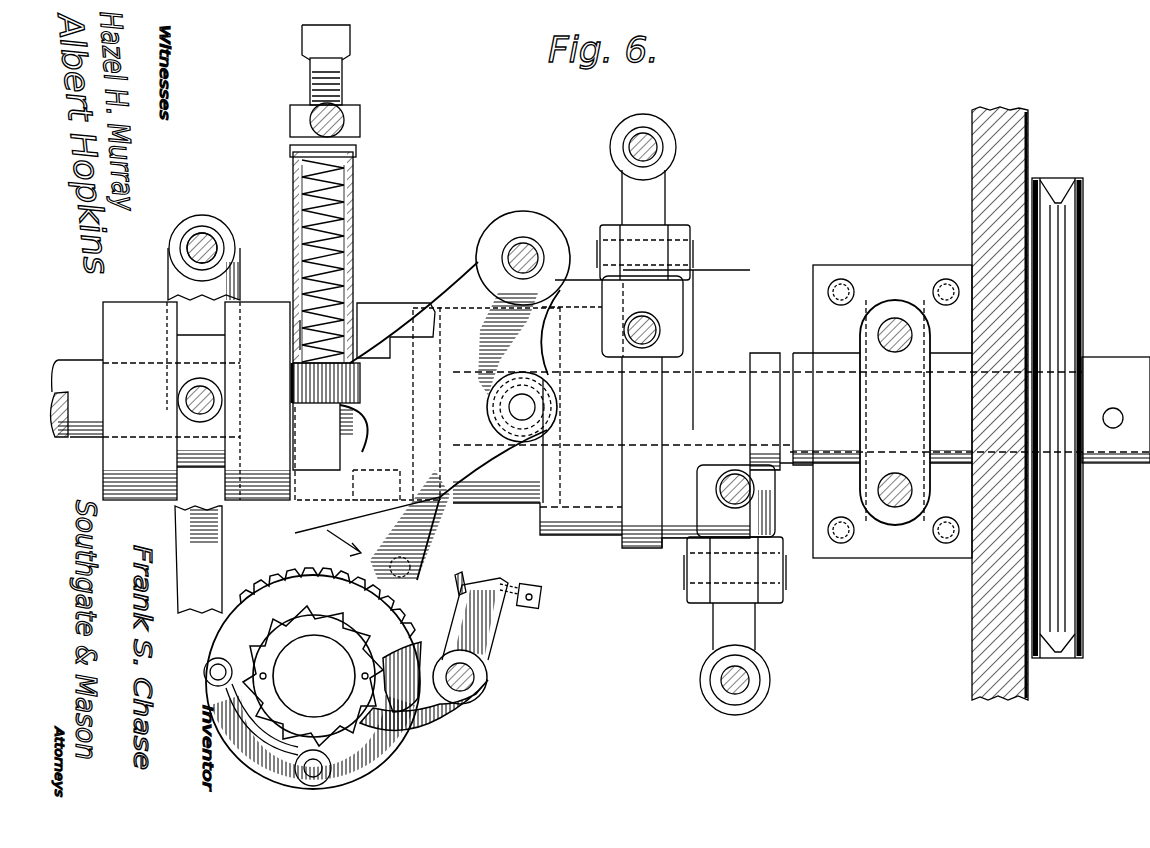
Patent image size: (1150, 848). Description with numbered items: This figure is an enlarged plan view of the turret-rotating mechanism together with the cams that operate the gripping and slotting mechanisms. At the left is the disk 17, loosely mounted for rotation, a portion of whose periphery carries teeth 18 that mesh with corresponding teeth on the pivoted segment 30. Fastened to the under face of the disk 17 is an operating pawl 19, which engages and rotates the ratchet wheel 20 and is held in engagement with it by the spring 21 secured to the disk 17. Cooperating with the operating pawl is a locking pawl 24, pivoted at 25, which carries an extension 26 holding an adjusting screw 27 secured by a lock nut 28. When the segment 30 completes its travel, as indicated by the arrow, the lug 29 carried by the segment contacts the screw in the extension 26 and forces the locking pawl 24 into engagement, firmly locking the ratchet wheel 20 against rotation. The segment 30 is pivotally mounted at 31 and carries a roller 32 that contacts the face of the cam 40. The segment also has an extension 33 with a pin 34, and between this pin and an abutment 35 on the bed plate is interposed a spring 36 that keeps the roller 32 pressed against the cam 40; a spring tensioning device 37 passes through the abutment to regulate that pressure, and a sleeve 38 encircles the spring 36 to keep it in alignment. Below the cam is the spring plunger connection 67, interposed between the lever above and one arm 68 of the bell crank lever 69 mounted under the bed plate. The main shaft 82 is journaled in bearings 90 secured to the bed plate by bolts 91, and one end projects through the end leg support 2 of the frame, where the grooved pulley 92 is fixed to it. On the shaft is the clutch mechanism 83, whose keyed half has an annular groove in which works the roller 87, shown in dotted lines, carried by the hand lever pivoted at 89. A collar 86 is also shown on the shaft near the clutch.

The end leg support 2 is at (1015, 132).
The disk 17 is at (225, 628).
The teeth 18 is at (403, 622).
The operating pawl 19 is at (298, 780).
The ratchet wheel 20 is at (395, 653).
The spring 21 is at (242, 735).
The locking pawl 24 is at (425, 735).
The pivot 25 is at (474, 680).
The extension 26 is at (485, 642).
The adjusting screw 27 is at (540, 596).
The lock nut 28 is at (508, 587).
The lug 29 is at (410, 563).
The pivoted segment 30 is at (427, 421).
The pivot 31 is at (524, 250).
The roller 32 is at (540, 412).
The extension 33 is at (298, 385).
The pin 34 is at (298, 330).
The abutment 35 is at (346, 128).
The spring 36 is at (346, 257).
The spring tensioning device 37 is at (345, 96).
The sleeve 38 is at (355, 200).
The cam 40 is at (548, 490).
The spring plunger connection 67 is at (765, 684).
The arm 68 is at (748, 646).
The bell crank lever 69 is at (712, 622).
The main shaft 82 is at (92, 440).
The clutch mechanism 83 is at (380, 305).
The collar 86 is at (168, 283).
The roller 87 is at (252, 318).
The pivot 89 is at (210, 247).
The bearings 90 is at (845, 388).
The bolts 91 is at (896, 320).
The grooved pulley 92 is at (1080, 648).